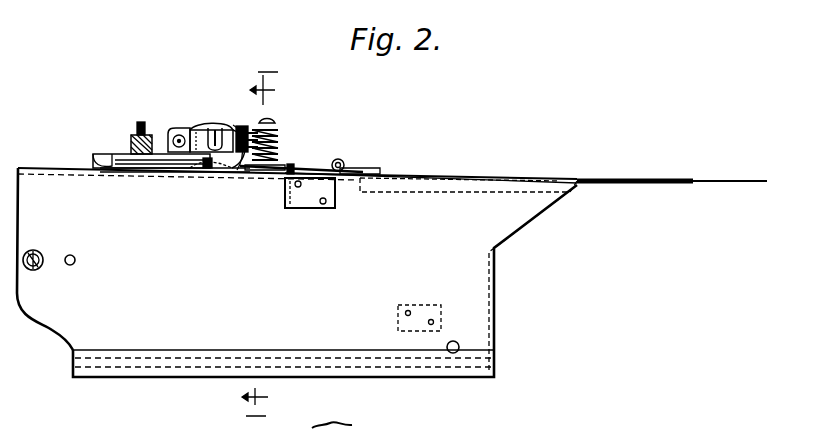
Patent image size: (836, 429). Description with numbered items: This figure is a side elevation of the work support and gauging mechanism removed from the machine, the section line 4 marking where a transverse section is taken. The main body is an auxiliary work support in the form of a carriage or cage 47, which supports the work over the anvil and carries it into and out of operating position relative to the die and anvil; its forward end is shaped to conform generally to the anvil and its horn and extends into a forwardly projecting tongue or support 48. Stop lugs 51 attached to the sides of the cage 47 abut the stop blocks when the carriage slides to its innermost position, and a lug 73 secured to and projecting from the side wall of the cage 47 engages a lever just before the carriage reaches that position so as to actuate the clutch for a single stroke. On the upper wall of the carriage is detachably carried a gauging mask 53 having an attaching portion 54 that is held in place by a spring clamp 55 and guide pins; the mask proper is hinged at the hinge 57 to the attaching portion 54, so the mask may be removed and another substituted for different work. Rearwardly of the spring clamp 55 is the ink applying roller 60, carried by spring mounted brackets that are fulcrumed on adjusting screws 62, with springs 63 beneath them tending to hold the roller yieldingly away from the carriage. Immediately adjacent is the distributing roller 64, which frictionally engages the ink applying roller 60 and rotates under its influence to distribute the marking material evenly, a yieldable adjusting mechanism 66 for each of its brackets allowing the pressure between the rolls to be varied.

The section line 4- 4 is at (260, 237).
The cage 47 is at (468, 282).
The tongue 48 is at (612, 187).
The stop lugs 51 is at (313, 197).
The gauging mask 53 is at (727, 184).
The attaching portion 54 is at (304, 168).
The spring clamp 55 is at (280, 132).
The hinge 57 is at (344, 162).
The ink applying roller 60 is at (204, 124).
The adjusting screws 62 is at (143, 122).
The springs 63 is at (203, 172).
The distributing roller 64 is at (168, 135).
The yieldable adjusting mechanism 66 is at (238, 173).
The lug 73 is at (423, 300).